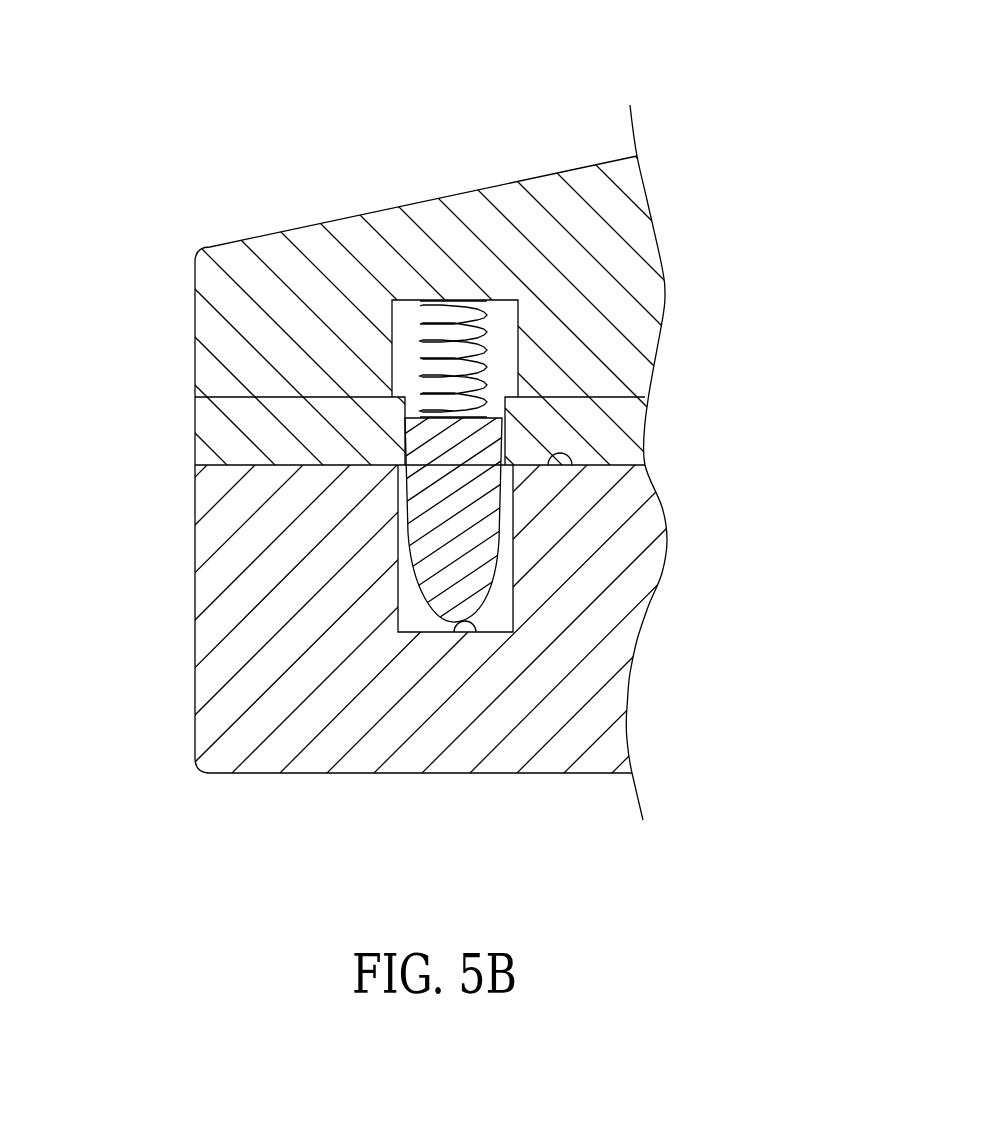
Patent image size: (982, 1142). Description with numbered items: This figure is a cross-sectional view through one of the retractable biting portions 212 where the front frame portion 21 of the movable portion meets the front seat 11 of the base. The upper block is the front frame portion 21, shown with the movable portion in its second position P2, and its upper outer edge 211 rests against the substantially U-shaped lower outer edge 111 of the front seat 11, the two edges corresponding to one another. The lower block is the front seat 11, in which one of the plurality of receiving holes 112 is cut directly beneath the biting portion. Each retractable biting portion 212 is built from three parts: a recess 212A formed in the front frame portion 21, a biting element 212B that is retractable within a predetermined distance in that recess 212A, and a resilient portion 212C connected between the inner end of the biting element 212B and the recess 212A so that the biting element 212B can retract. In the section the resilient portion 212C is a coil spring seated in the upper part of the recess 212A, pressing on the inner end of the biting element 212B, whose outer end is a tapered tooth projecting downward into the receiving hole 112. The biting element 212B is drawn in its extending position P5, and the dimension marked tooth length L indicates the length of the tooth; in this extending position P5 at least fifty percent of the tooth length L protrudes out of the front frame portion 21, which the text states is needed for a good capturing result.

The front seat 11 is at (605, 645).
The lower outer edge 111 is at (547, 470).
The receiving hole 112 is at (458, 633).
The front frame portion 21 is at (600, 310).
The upper outer edge 211 is at (598, 465).
The retractable biting portion 212 is at (608, 77).
The recess 212A is at (392, 316).
The biting element 212B is at (487, 453).
The resilient portion 212C is at (480, 357).
The second position P2 is at (195, 320).
The extending position P5 is at (487, 610).
The tooth length L is at (100, 397).